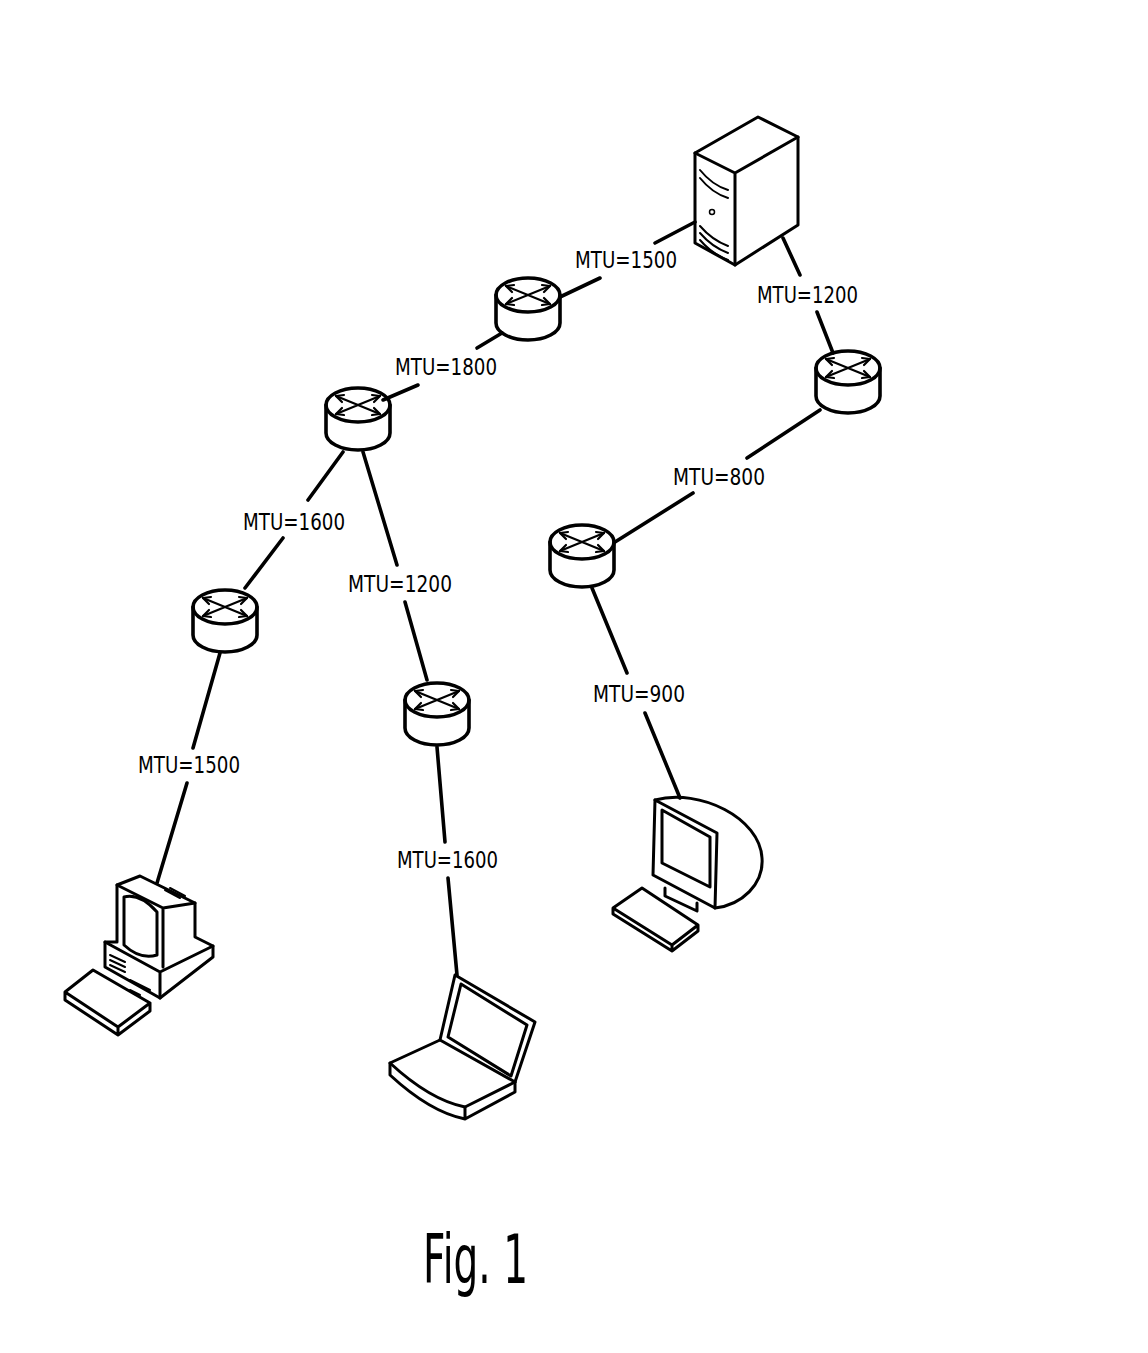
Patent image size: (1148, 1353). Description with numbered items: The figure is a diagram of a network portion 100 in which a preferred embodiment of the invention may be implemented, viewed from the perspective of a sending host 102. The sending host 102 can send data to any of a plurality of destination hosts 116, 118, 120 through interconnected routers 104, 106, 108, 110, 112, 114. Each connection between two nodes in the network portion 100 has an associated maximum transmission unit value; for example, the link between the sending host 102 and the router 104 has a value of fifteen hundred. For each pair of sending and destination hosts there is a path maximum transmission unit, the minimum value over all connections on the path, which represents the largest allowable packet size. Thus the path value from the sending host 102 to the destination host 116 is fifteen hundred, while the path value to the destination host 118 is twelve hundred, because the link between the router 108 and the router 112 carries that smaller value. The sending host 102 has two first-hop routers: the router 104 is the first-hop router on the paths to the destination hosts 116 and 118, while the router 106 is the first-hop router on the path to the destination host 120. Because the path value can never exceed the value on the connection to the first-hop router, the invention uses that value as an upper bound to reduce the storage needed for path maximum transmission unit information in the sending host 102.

The network portion 100 is at (887, 77).
The sending host 102 is at (783, 187).
The router 104 is at (560, 319).
The router 106 is at (855, 352).
The router 108 is at (393, 422).
The router 110 is at (258, 622).
The router 112 is at (458, 683).
The router 114 is at (617, 567).
The destination host 116 is at (195, 903).
The destination host 118 is at (535, 1025).
The destination host 120 is at (760, 842).